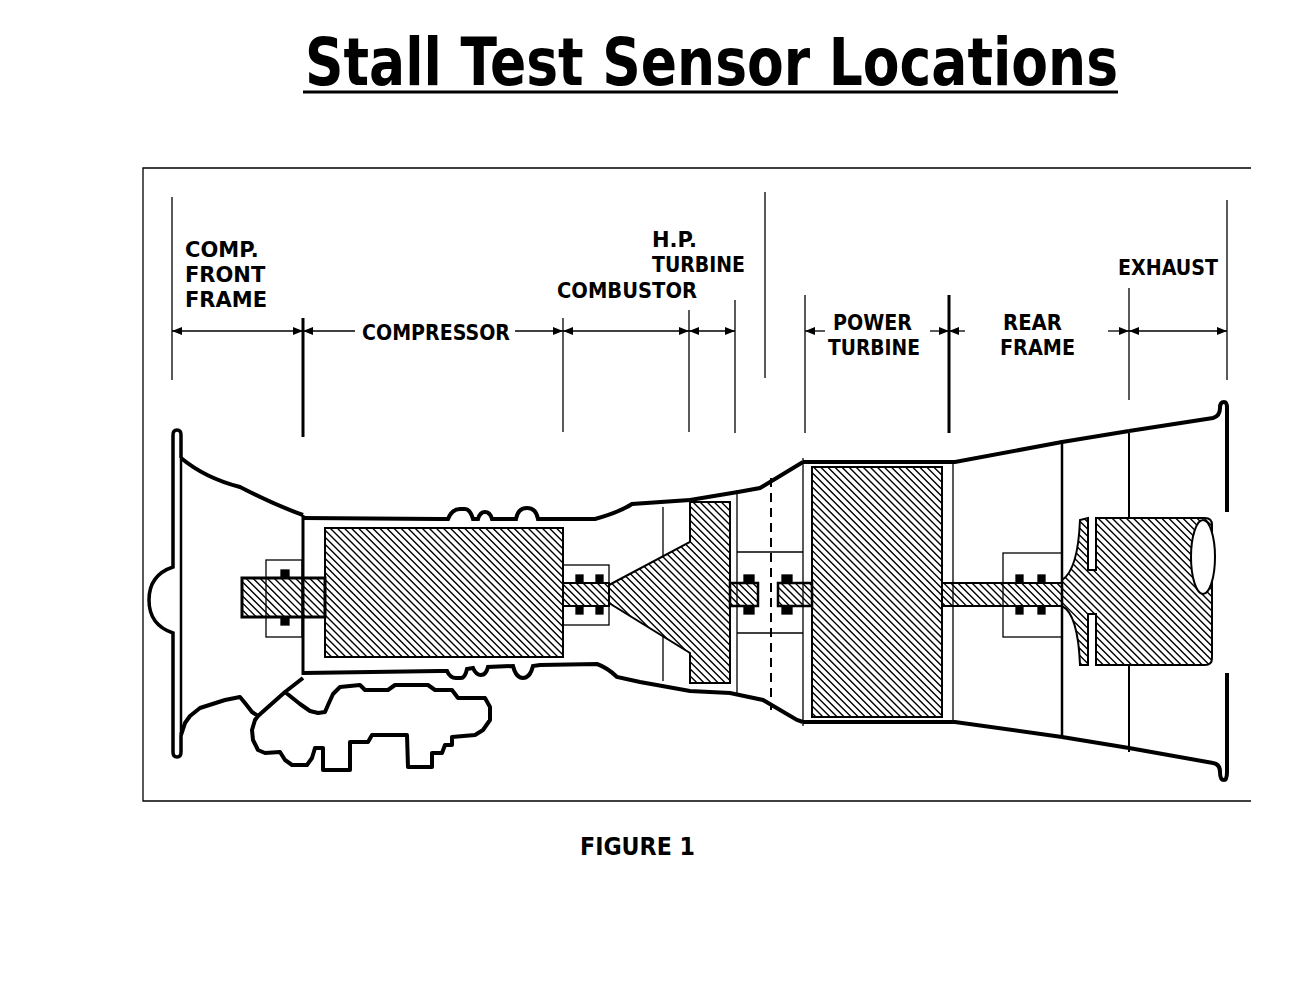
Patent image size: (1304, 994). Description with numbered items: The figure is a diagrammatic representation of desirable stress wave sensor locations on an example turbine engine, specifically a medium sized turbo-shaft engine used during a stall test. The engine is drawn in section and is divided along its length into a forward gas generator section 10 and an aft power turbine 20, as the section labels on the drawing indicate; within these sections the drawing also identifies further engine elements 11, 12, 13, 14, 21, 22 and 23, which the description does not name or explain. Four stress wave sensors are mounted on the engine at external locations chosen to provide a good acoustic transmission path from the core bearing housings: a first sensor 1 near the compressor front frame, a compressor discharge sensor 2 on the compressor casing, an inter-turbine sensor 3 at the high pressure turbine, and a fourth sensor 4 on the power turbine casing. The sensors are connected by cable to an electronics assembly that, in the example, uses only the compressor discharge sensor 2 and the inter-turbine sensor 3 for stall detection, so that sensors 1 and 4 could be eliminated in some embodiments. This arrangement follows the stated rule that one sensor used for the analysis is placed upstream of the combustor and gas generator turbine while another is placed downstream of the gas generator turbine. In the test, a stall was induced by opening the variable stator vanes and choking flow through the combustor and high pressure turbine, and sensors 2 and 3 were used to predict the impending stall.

The stress wave sensor 1 is at (247, 717).
The compressor discharge sensor 2 is at (618, 680).
The inter-turbine sensor 3 is at (745, 490).
The stress wave sensor 4 is at (1013, 727).
The gas generator section 10 is at (765, 203).
The compressor front frame 11 is at (235, 486).
The compressor rotor 12 is at (465, 527).
The combustor 13 is at (619, 540).
The high pressure turbine 14 is at (712, 690).
The power turbine section 20 is at (1227, 203).
The power turbine rotor 21 is at (876, 466).
The rear frame 22 is at (1062, 438).
The exhaust 23 is at (1208, 500).